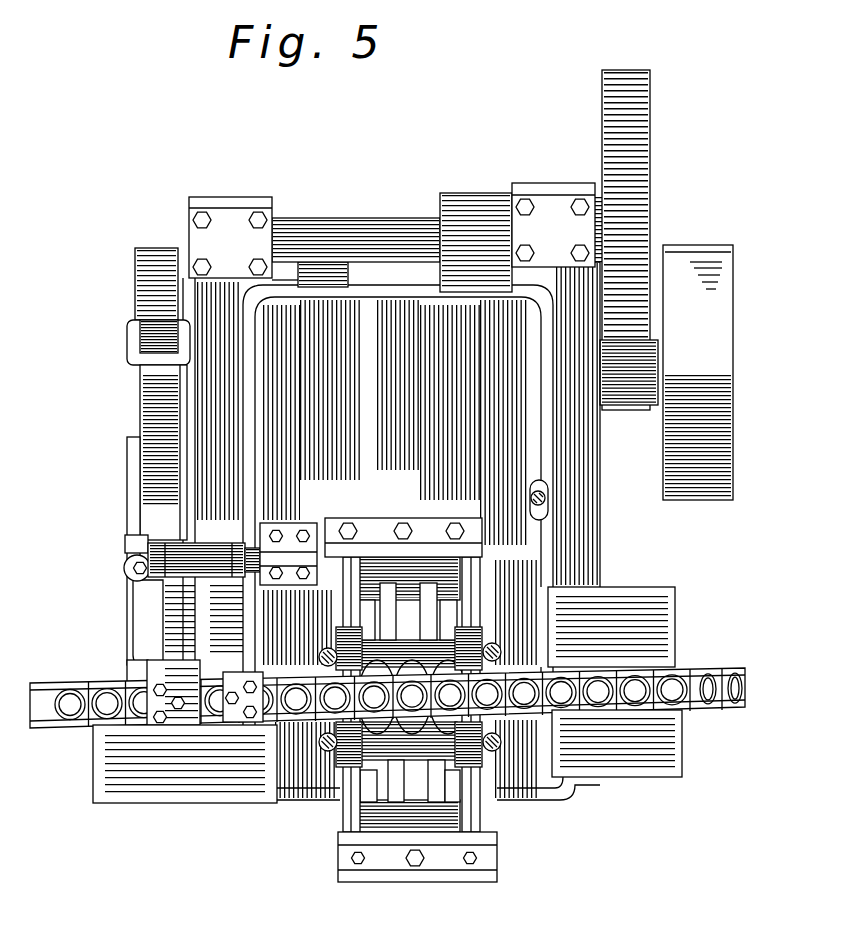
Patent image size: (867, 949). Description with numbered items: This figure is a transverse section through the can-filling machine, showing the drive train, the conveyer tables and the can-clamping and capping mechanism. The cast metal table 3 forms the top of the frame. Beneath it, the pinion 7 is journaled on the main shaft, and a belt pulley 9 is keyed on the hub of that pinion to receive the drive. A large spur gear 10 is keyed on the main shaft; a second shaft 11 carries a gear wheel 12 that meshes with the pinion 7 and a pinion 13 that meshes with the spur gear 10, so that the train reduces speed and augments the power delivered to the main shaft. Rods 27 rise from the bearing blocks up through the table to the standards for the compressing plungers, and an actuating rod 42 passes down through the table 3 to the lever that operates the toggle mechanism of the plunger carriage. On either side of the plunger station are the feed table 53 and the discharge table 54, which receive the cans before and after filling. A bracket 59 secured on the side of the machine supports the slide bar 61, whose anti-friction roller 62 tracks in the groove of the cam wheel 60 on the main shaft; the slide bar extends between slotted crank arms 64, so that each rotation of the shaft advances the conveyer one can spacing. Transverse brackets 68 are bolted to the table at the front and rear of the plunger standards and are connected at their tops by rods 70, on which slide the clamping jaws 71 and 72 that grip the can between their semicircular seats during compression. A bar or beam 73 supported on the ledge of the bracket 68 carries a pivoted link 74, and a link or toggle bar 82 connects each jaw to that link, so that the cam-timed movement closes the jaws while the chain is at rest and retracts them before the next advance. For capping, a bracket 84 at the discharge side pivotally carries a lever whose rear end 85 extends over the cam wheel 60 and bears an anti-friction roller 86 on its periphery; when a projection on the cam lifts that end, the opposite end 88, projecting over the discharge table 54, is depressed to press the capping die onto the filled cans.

The table 3 is at (533, 450).
The pinion 7 is at (630, 408).
The belt pulley 9 is at (710, 370).
The spur gear 10 is at (435, 280).
The shaft 11 is at (350, 232).
The gear wheel 12 is at (632, 232).
The pinion 13 is at (455, 198).
The rods 27 is at (328, 732).
The actuating rod 42 is at (548, 500).
The feed table 53 is at (652, 727).
The discharge table 54 is at (187, 778).
The bracket 59 is at (132, 542).
The cam wheel 60 is at (148, 272).
The slide bar 61 is at (140, 610).
The anti-friction roller 62 is at (137, 448).
The slotted crank arms 64 is at (163, 600).
The transverse brackets 68 is at (382, 533).
The rods 70 is at (463, 610).
The clamping jaw 71 is at (452, 733).
The clamping jaw 72 is at (494, 648).
The bar or beam 73 is at (422, 560).
The link 74 is at (437, 597).
The link or toggle bar 82 is at (352, 628).
The bracket 84 is at (260, 543).
The lever end 85 is at (192, 435).
The anti-friction roller 86 is at (150, 332).
The lever end 88 is at (190, 716).